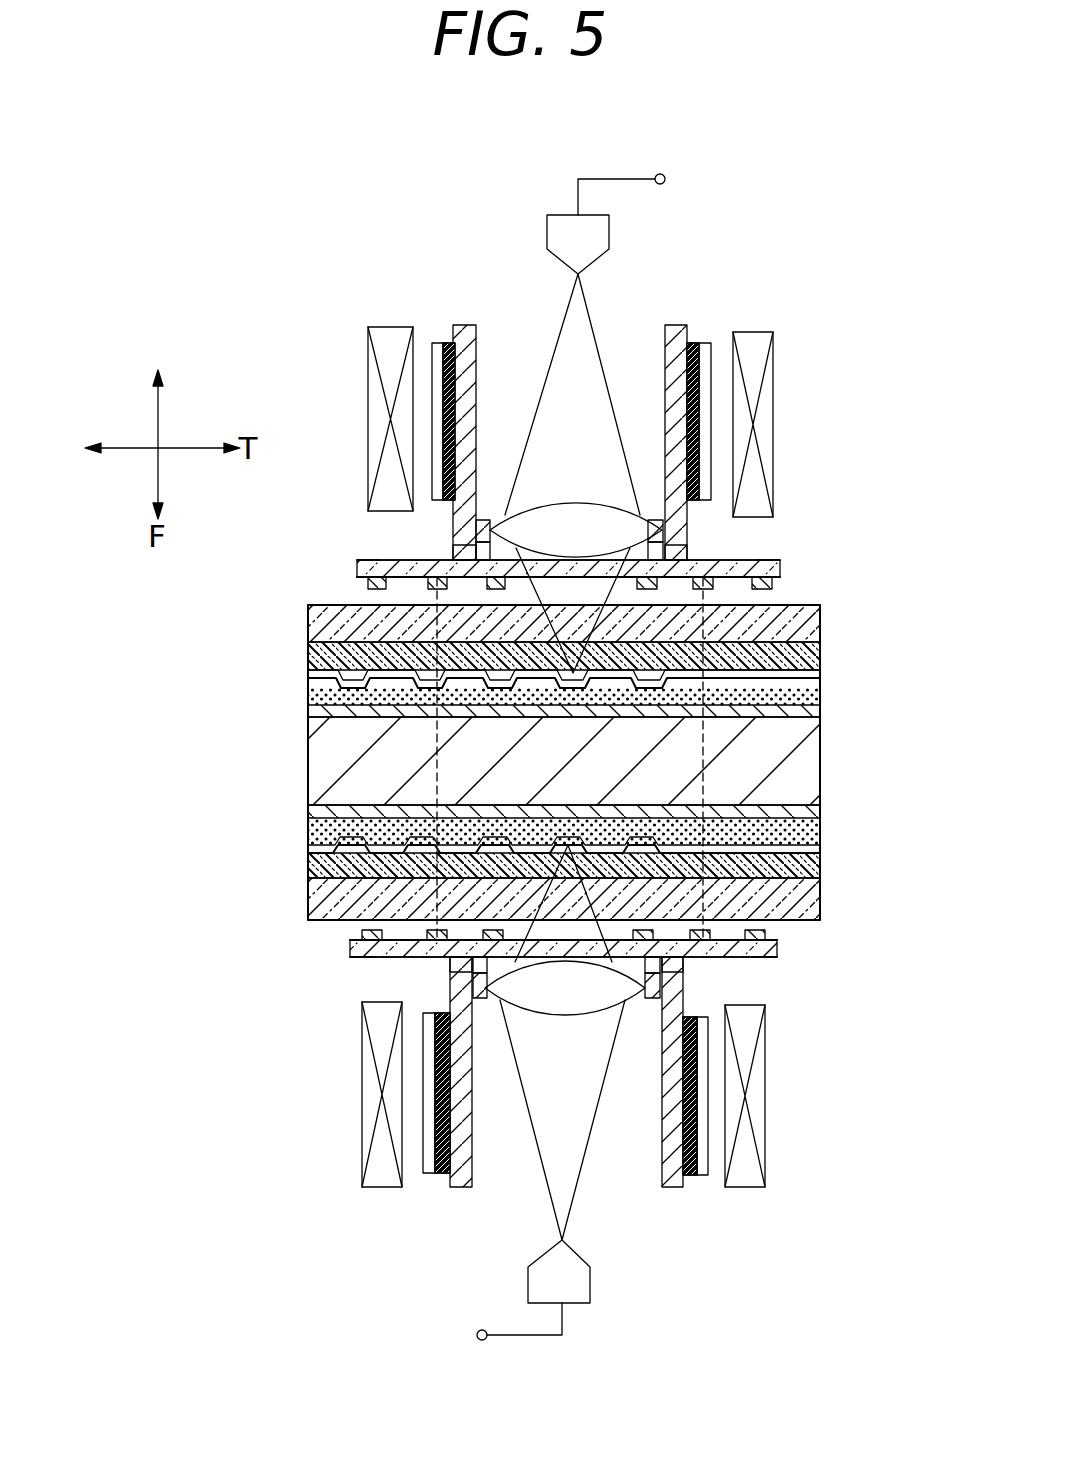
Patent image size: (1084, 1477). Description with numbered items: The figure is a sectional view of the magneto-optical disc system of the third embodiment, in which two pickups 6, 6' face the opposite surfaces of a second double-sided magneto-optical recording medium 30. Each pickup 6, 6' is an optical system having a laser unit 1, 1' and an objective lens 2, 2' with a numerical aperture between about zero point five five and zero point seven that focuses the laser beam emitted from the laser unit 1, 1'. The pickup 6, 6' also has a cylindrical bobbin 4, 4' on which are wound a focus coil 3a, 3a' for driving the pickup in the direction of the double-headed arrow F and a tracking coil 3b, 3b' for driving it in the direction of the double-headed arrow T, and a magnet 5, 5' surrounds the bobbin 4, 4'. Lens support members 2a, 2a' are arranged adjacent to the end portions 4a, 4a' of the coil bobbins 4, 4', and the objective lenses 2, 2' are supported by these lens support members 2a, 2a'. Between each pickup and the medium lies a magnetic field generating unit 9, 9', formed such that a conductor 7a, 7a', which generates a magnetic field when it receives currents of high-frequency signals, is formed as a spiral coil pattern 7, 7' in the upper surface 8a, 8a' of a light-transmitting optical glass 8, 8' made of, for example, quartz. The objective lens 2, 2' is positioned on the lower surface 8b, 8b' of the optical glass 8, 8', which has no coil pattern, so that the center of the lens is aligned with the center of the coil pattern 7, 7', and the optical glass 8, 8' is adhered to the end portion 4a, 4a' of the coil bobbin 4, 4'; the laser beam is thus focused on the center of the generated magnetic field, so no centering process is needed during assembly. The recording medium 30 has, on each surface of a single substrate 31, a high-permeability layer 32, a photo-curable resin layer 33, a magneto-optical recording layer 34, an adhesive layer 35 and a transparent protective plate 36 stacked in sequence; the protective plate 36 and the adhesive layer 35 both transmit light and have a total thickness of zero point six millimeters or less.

The laser unit 1 is at (606, 224).
The laser unit 1' is at (533, 1290).
The objective lens 2 is at (574, 473).
The objective lens 2' is at (571, 1042).
The lens support member 2a is at (569, 467).
The lens support member 2a' is at (566, 1036).
The focus coil 3a is at (600, 382).
The focus coil 3a' is at (542, 1132).
The tracking coil 3b is at (596, 382).
The tracking coil 3b' is at (550, 1132).
The bobbin 4 is at (581, 412).
The bobbin 4' is at (555, 1118).
The end portion of coil bobbin 4a is at (572, 531).
The end portion of coil bobbin 4a' is at (572, 985).
The magnet 5 is at (568, 421).
The magnet 5' is at (564, 1098).
The pickup 6 is at (662, 284).
The pickup 6' is at (490, 1231).
The spiral coil pattern 7 is at (625, 587).
The spiral coil pattern 7' is at (625, 937).
The conductor 7a is at (569, 546).
The conductor 7a' is at (566, 993).
The optical glass 8 is at (577, 548).
The optical glass 8' is at (559, 966).
The upper surface of optical glass 8a is at (577, 569).
The upper surface of optical glass 8a' is at (558, 950).
The lower surface of optical glass 8b is at (576, 545).
The lower surface of optical glass 8b' is at (558, 970).
The magnetic field generating unit 9 is at (607, 504).
The magnetic field generating unit 9' is at (507, 1004).
The second double-sided magneto-optical recording medium 30 is at (888, 736).
The substrate 31 is at (810, 766).
The high-permeability layer 32 is at (822, 712).
The photo-curable resin layer 33 is at (822, 695).
The magneto-optical recording layer 34 is at (822, 676).
The adhesive layer 35 is at (822, 655).
The transparent protective plate 36 is at (822, 627).